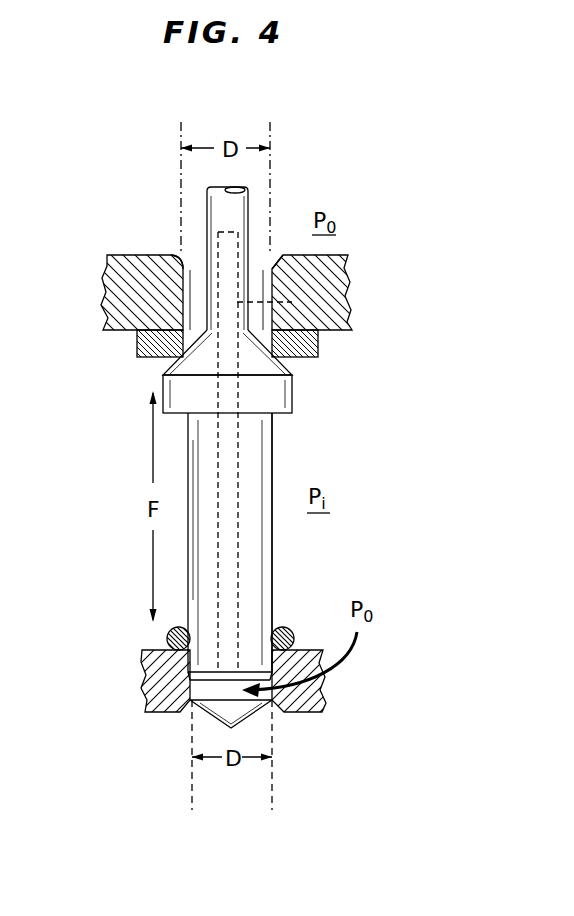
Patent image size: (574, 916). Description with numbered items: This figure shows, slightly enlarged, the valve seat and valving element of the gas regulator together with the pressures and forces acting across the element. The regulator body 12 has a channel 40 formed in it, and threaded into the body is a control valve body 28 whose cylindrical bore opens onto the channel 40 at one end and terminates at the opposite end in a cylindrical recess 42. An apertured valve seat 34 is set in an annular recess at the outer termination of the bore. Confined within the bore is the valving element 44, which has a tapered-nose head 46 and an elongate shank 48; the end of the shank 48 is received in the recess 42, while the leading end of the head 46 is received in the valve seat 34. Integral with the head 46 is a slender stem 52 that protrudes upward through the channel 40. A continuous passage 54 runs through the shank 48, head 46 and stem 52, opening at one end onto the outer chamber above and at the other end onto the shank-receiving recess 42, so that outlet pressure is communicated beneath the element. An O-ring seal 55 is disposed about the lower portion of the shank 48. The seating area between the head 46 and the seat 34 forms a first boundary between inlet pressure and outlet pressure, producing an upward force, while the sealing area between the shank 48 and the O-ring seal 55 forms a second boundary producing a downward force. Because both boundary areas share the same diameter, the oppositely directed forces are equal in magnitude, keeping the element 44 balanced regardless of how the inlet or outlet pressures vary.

The regulator body 12 is at (337, 287).
The channel 40 is at (186, 255).
The apertured valve seat 34 is at (137, 345).
The slender stem 52 is at (237, 212).
The continuous passage 54 is at (277, 295).
The tapered-nose head 46 is at (275, 366).
The valving element 44 is at (262, 578).
The elongate shank 48 is at (272, 441).
The O-ring seal 55 is at (167, 641).
The control valve body 28 is at (293, 708).
The cylindrical recess 42 is at (182, 716).